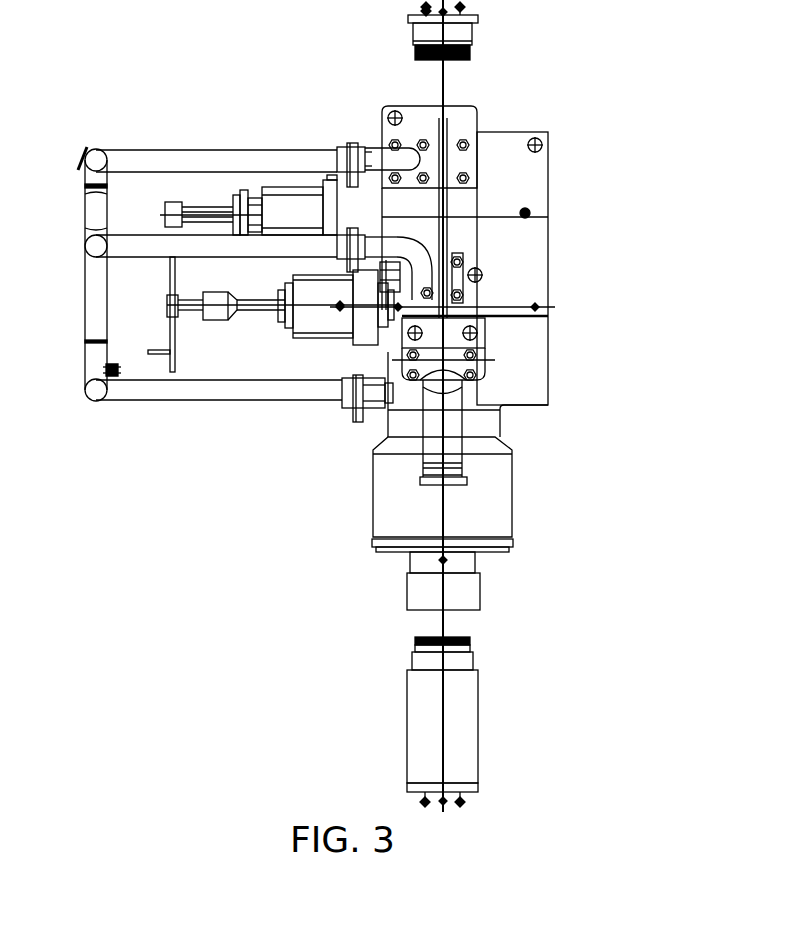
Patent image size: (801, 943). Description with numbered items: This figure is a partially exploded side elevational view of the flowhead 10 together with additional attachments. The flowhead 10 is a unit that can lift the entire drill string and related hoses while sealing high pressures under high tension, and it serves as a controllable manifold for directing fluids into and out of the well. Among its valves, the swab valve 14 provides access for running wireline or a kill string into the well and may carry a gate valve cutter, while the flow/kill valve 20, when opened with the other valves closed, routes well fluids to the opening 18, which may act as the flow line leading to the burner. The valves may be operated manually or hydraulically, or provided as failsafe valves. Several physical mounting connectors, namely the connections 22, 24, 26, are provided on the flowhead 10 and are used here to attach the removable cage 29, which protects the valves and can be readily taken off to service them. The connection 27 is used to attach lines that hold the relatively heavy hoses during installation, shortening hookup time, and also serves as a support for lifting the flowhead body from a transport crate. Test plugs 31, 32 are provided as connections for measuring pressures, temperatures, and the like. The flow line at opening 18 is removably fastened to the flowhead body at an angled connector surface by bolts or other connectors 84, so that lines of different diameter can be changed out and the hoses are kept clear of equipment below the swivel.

The flowhead 10 is at (642, 288).
The swab valve 14 is at (283, 200).
The opening 18 is at (455, 440).
The flow/kill valve 20 is at (320, 317).
The connection 22 is at (340, 150).
The connection 24 is at (400, 240).
The connection 26 is at (362, 420).
The connection 27 is at (455, 312).
The removable cage 29 is at (138, 158).
The test plug 31 is at (458, 45).
The test plug 32 is at (415, 788).
The connectors 84 is at (480, 352).